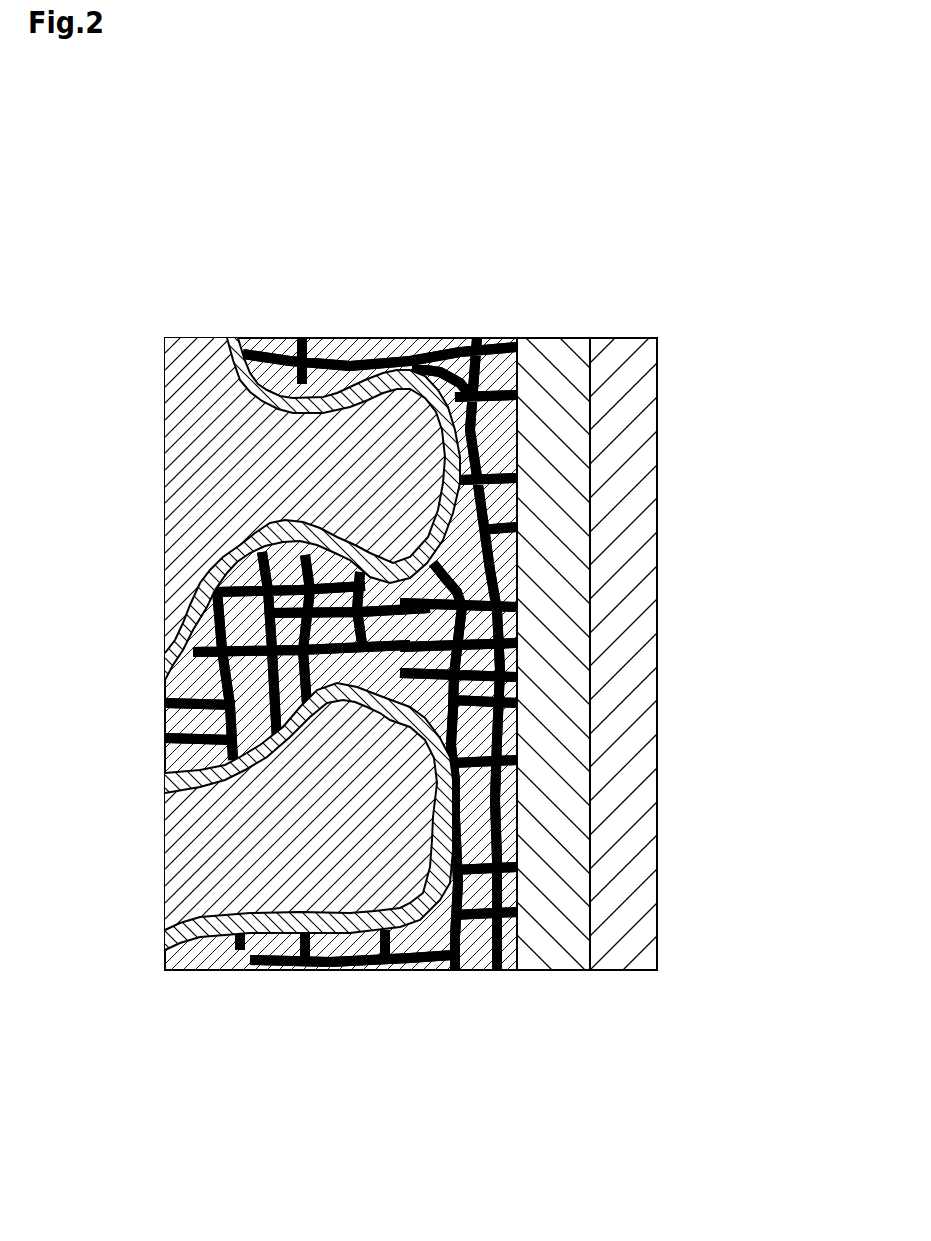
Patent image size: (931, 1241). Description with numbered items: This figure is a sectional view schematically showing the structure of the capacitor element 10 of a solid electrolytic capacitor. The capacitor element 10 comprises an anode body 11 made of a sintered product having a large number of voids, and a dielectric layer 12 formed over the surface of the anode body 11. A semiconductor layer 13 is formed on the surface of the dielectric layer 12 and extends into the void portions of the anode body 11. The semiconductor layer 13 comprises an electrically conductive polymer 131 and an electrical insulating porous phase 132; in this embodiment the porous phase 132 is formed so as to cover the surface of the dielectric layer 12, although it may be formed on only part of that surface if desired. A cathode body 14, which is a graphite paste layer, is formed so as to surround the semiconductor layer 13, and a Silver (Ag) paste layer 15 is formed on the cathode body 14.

The capacitor element 10 is at (205, 990).
The anode body 11 is at (185, 355).
The dielectric layer 12 is at (236, 352).
The semiconductor layer 13 is at (451, 675).
The electrically conductive polymer 131 is at (495, 380).
The electrical insulating porous phase 132 is at (488, 942).
The cathode body 14 is at (565, 347).
The Silver (Ag) paste layer 15 is at (620, 955).